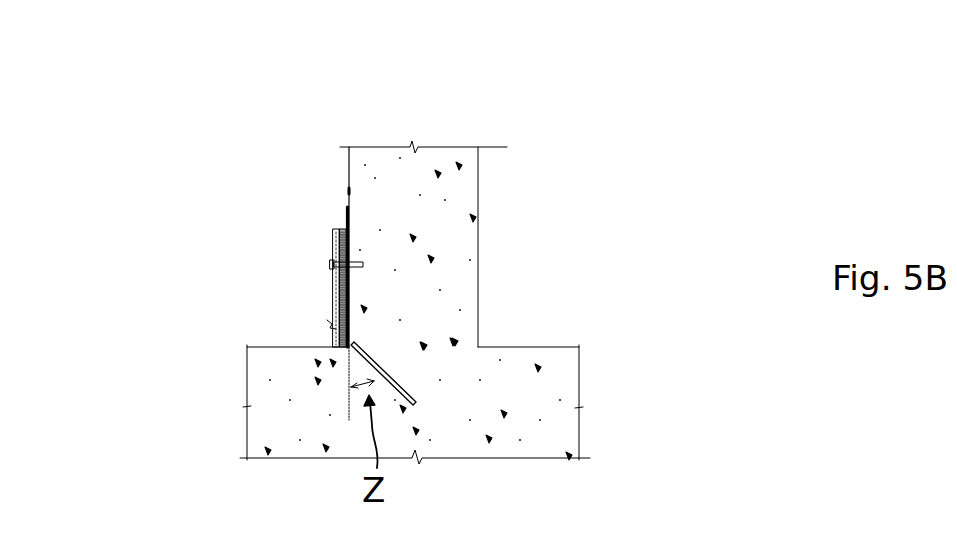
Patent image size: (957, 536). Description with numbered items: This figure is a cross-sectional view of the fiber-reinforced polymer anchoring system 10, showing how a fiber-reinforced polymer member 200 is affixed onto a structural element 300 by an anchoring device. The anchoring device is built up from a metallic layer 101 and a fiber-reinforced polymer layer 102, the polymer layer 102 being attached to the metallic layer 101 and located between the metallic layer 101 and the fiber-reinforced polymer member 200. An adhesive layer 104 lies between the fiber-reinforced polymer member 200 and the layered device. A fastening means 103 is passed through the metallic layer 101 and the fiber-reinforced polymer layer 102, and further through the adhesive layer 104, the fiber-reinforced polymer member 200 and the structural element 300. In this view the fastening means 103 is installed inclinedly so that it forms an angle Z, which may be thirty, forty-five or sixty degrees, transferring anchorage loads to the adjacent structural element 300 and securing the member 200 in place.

The reinforced structure 10 is at (652, 103).
The structural element 300 is at (430, 212).
The fiber-reinforced polymer member 200 is at (338, 202).
The metallic layer 101 is at (331, 240).
The fastening means 103 is at (324, 255).
The fiber-reinforced polymer layer 102 is at (334, 285).
The adhesive layer 104 is at (341, 308).